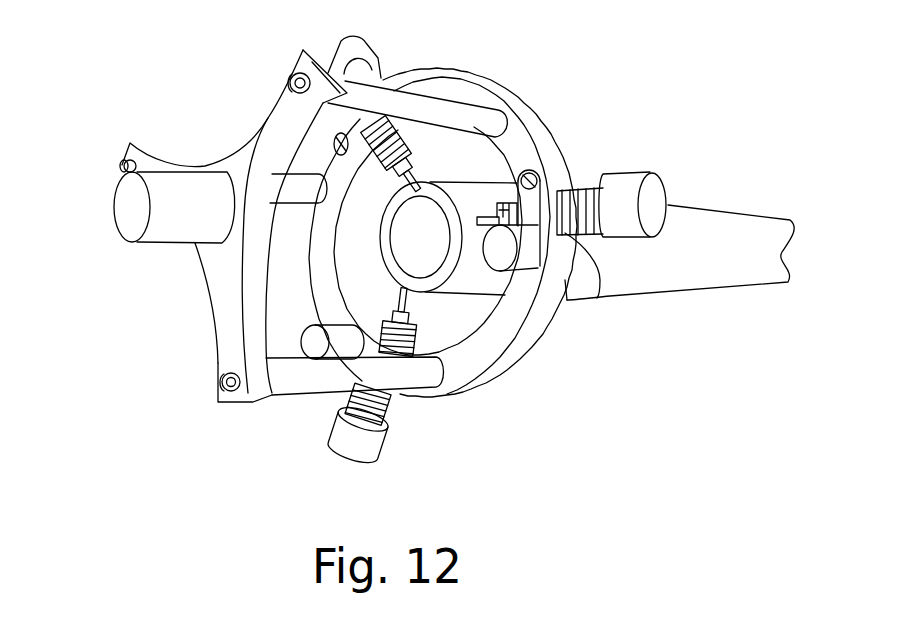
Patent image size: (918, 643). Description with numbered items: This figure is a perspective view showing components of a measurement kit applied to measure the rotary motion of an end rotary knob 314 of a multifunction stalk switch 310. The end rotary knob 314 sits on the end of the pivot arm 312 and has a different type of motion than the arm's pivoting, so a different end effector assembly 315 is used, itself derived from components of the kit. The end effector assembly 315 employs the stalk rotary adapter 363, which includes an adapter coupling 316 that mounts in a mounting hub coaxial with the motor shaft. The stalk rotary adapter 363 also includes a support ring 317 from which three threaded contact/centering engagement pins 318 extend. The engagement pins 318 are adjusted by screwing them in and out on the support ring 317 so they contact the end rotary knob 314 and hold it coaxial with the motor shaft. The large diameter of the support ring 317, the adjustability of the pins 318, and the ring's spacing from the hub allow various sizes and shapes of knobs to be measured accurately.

The multifunction stalk switch 310 is at (743, 305).
The pivot arm 312 is at (727, 208).
The end rotary knob 314 is at (600, 277).
The end effector assembly 315 is at (197, 71).
The adapter coupling 316 is at (160, 245).
The support ring 317 is at (512, 82).
The threaded contact/centering engagement pins 318 is at (631, 170).
The stalk rotary adapter 363 is at (290, 397).